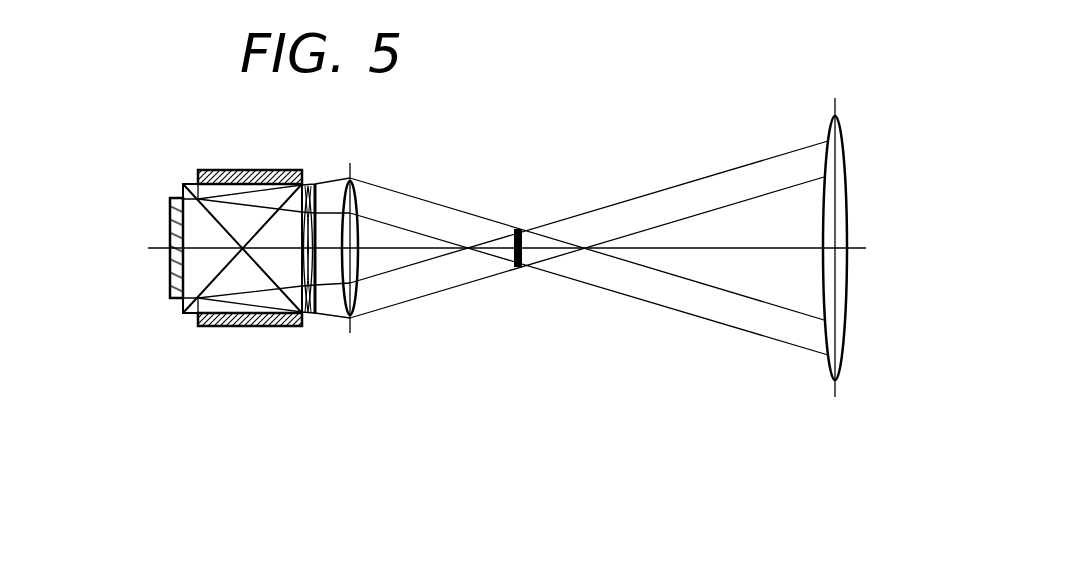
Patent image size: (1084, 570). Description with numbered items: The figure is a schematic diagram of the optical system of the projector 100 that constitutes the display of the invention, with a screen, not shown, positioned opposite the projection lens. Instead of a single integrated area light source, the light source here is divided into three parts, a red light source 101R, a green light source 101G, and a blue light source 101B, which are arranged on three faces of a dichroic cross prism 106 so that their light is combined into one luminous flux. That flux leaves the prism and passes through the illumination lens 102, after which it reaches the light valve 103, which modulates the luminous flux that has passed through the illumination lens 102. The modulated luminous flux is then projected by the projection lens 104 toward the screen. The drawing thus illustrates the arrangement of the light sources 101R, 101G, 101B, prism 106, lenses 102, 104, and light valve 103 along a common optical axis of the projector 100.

The projector 100 is at (594, 178).
The red light source 101R is at (275, 170).
The green light source 101G is at (170, 212).
The blue light source 101B is at (218, 328).
The illumination lens 102 is at (353, 176).
The light valve 103 is at (516, 229).
The projection lens 104 is at (838, 120).
The dichroic cross prism 106 is at (311, 316).